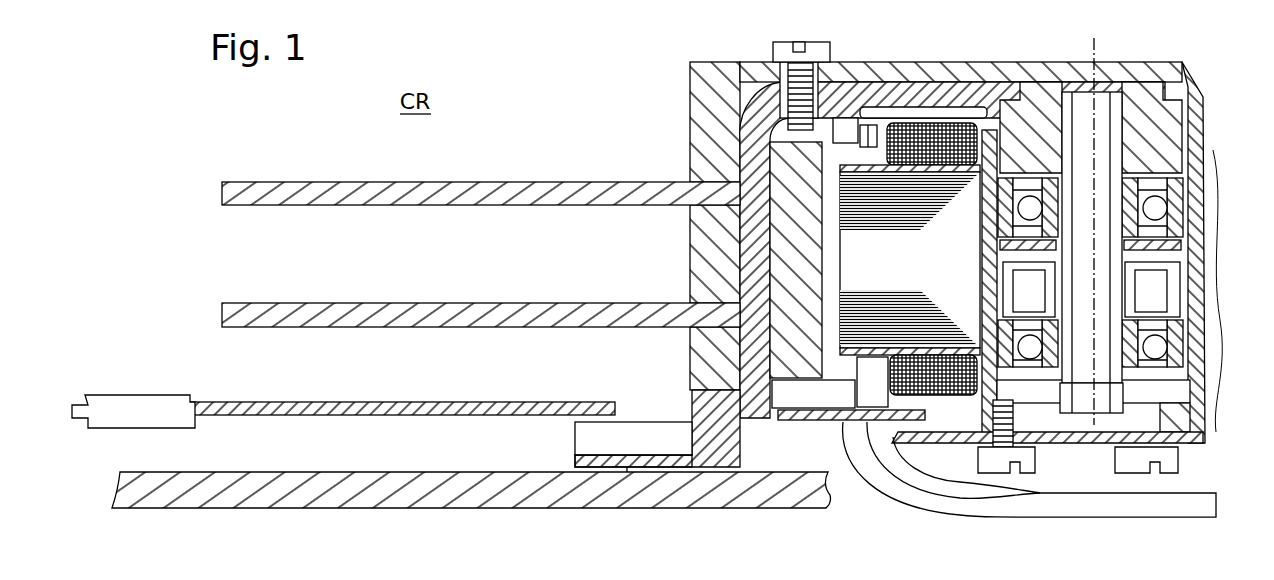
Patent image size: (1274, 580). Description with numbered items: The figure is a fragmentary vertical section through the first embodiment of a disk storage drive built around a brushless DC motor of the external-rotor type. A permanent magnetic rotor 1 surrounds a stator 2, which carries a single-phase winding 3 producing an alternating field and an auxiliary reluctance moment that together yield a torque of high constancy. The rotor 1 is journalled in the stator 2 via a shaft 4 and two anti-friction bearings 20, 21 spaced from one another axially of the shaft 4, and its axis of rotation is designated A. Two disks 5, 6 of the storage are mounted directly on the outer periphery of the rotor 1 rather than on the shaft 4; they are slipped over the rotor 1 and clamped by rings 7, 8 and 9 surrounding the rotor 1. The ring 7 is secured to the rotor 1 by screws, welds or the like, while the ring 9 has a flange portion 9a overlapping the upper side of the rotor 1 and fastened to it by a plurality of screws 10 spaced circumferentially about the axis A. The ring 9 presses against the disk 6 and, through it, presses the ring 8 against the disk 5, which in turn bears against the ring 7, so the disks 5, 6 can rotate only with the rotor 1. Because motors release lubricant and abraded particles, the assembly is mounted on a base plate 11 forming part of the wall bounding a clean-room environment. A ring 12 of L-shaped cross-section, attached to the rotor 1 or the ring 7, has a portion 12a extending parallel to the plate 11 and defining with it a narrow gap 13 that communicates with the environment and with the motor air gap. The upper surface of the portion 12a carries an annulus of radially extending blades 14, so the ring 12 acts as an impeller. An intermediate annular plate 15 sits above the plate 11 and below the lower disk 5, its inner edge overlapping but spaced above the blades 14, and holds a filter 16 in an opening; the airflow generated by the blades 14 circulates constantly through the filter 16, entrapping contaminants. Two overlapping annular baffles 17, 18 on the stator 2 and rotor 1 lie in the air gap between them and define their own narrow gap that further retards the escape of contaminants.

The permanent magnetic rotor 1 is at (795, 278).
The stator 2 is at (946, 279).
The winding 3 is at (888, 375).
The shaft 4 is at (1078, 105).
The disk 5 is at (286, 312).
The disk 6 is at (286, 193).
The ring 7 is at (712, 358).
The ring 8 is at (712, 252).
The ring 9 is at (705, 112).
The flange portion 9a is at (755, 82).
The screw 10 is at (809, 55).
The base plate 11 is at (270, 488).
The ring 12 is at (723, 440).
The portion 12a is at (587, 460).
The gap 13 is at (627, 472).
The blades 14 is at (655, 435).
The intermediate annular plate 15 is at (415, 405).
The filter 16 is at (134, 416).
The annular baffle 17 is at (845, 88).
The annular baffle 18 is at (888, 110).
The anti-friction bearing 20 is at (1180, 217).
The anti-friction bearing 21 is at (1180, 350).
The axis of rotation A is at (1100, 46).